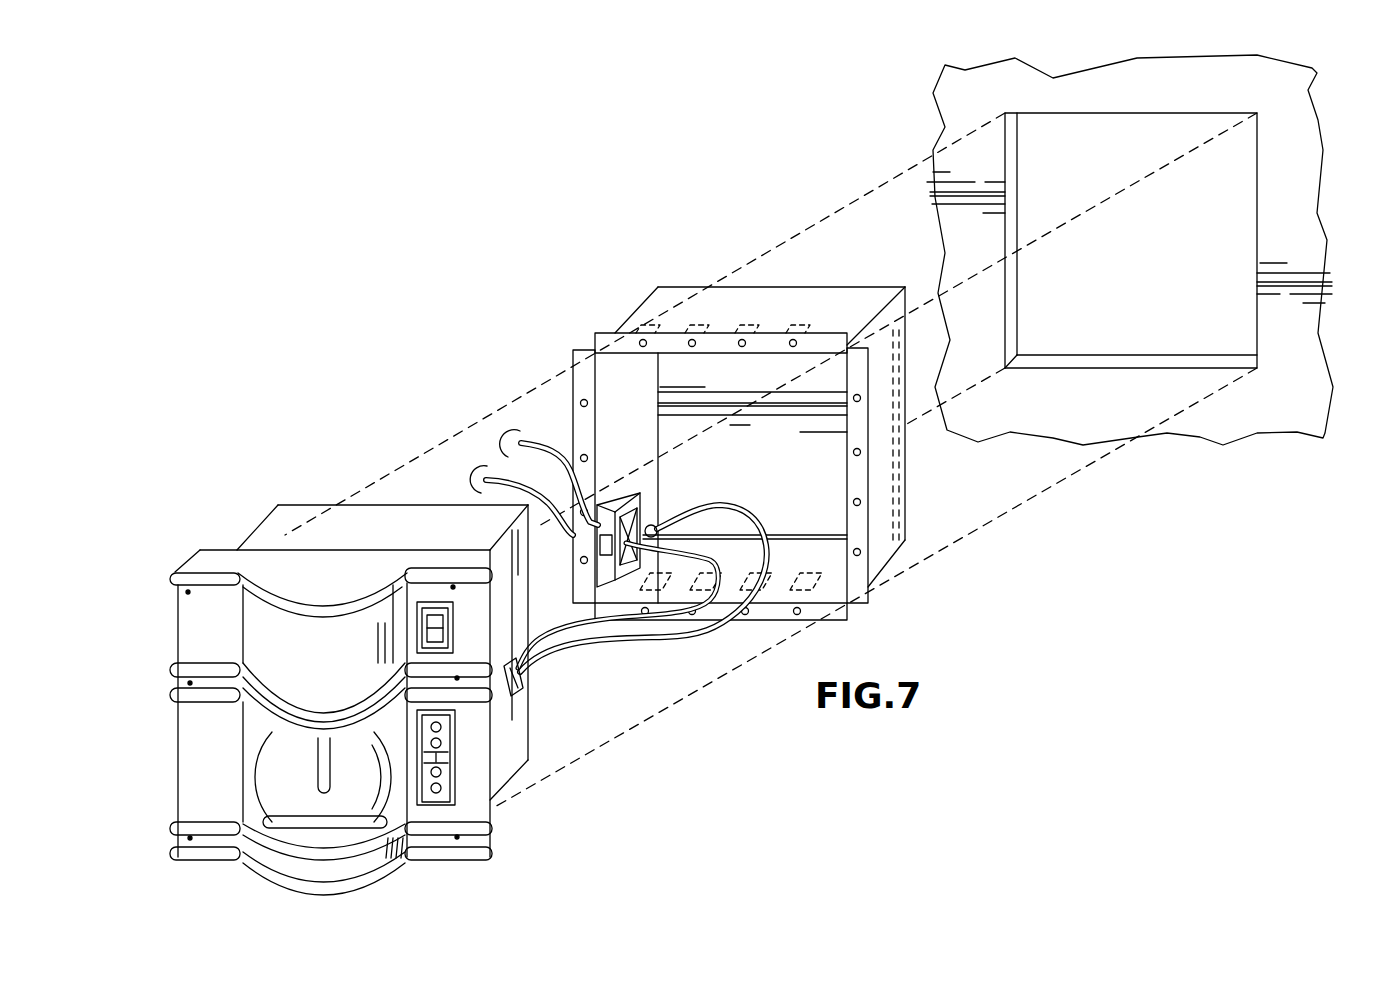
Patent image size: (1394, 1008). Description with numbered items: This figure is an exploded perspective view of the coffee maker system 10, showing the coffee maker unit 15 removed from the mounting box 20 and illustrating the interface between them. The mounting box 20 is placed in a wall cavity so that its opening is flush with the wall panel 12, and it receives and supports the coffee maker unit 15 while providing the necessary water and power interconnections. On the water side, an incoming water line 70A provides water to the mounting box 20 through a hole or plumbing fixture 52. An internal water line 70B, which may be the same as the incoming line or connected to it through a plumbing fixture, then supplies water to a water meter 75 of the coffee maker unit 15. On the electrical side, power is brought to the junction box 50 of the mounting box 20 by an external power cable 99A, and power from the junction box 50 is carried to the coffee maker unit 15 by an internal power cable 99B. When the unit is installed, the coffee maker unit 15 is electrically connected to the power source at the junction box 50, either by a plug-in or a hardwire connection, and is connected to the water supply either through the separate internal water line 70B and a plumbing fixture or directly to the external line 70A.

The beverage brewing system 10 is at (487, 266).
The wall panel 12 is at (1310, 143).
The coffee maker unit 15 is at (513, 775).
The mounting box 20 is at (900, 546).
The junction box 50 is at (622, 493).
The hole (plumbing fixture) 52 is at (652, 522).
The incoming water line 70A is at (536, 437).
The internal water line 70B is at (600, 638).
The water meter 75 is at (521, 688).
The external power cable 99A is at (492, 472).
The internal power cable 99B is at (677, 614).